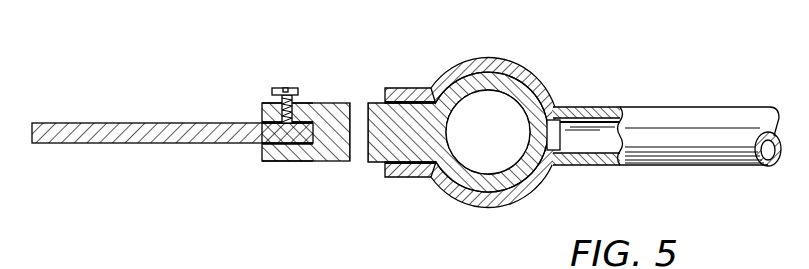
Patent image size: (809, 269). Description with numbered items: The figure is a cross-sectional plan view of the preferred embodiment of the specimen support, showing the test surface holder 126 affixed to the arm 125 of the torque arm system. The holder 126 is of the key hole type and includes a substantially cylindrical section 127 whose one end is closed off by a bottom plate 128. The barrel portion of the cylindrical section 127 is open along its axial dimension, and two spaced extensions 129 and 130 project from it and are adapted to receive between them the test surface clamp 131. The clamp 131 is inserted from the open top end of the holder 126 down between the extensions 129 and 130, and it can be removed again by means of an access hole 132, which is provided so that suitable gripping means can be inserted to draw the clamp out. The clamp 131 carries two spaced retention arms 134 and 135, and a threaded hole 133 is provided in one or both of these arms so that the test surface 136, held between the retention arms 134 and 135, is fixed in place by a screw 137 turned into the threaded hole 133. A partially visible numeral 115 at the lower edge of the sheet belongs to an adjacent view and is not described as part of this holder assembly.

The handle (partial, adjacent figure) 115 is at (256, 263).
The arm 125 is at (678, 107).
The test surface holder 126 is at (427, 192).
The substantially cylindrical section 127 is at (505, 58).
The bottom plate 128 is at (503, 132).
The spaced extension 129 is at (398, 177).
The spaced extension 130 is at (414, 88).
The test surface clamp 131 is at (322, 163).
The access hole 132 is at (358, 112).
The threaded hole 133 is at (282, 103).
The spaced retention arm 134 is at (262, 112).
The spaced retention arm 135 is at (260, 153).
The test surface 136 is at (112, 143).
The screw 137 is at (298, 88).